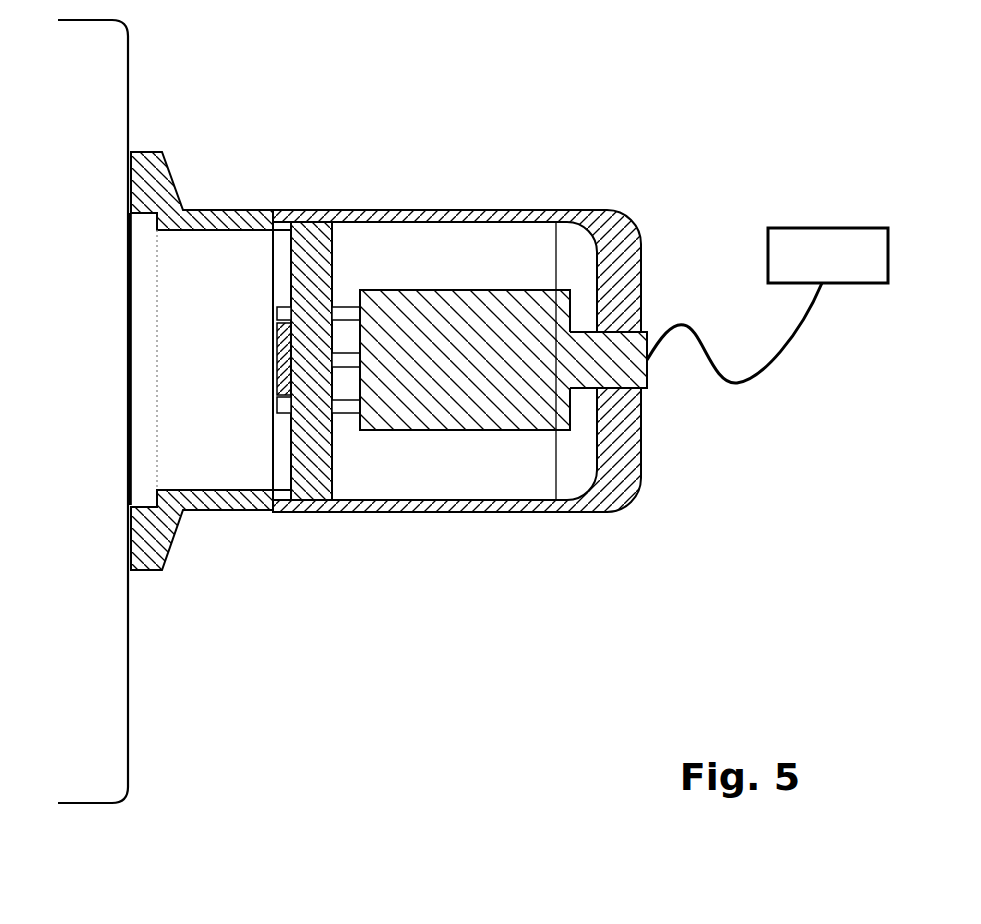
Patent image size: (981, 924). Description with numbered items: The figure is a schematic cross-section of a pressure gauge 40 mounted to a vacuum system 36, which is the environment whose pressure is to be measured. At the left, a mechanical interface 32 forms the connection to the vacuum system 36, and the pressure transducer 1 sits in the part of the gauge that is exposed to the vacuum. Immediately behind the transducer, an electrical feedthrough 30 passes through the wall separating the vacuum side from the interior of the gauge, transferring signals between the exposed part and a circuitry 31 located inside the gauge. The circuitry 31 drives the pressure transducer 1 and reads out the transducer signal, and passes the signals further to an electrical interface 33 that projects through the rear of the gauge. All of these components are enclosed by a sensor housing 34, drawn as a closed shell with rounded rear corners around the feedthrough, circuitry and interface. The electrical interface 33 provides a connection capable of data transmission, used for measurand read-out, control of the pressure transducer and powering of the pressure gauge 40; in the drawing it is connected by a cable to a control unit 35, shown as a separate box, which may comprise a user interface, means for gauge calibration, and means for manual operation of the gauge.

The pressure transducer 1 is at (283, 363).
The electrical feedthrough 30 is at (320, 370).
The circuitry 31 is at (427, 303).
The mechanical interface 32 is at (138, 200).
The electrical interface 33 is at (630, 360).
The sensor housing 34 is at (566, 520).
The control unit 35 is at (813, 271).
The vacuum system 36 is at (75, 112).
The pressure gauge 40 is at (236, 597).